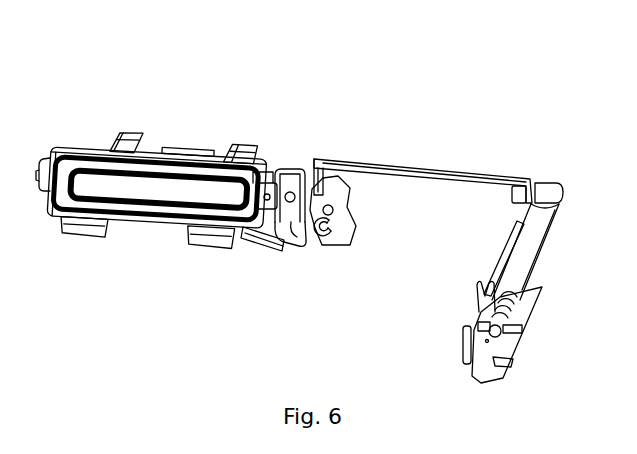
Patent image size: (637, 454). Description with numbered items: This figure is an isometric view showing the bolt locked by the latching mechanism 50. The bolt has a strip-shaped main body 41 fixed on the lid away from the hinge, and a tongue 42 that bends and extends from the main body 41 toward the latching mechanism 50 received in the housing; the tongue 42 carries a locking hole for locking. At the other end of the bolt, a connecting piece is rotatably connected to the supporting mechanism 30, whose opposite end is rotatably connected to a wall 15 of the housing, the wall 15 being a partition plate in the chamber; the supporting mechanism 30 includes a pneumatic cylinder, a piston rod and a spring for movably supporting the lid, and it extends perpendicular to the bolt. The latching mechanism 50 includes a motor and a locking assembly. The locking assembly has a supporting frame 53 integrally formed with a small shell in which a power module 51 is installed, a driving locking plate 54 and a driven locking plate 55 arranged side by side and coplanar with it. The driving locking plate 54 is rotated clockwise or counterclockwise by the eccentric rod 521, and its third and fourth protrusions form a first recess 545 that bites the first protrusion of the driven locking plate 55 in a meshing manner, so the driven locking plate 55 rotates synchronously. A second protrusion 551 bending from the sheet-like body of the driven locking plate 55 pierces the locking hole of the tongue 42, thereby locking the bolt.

The latching mechanism 50 is at (227, 124).
The power module 51 is at (157, 208).
The supporting frame 53 is at (292, 169).
The driving locking plate 54 is at (271, 243).
The first recess 545 is at (271, 238).
The driven locking plate 55 is at (354, 244).
The second protrusion 551 is at (345, 188).
The eccentric rod 521 is at (300, 243).
The tongue 42 is at (316, 157).
The main body 41 is at (408, 163).
The supporting mechanism 30 is at (544, 250).
The wall 15 is at (477, 300).